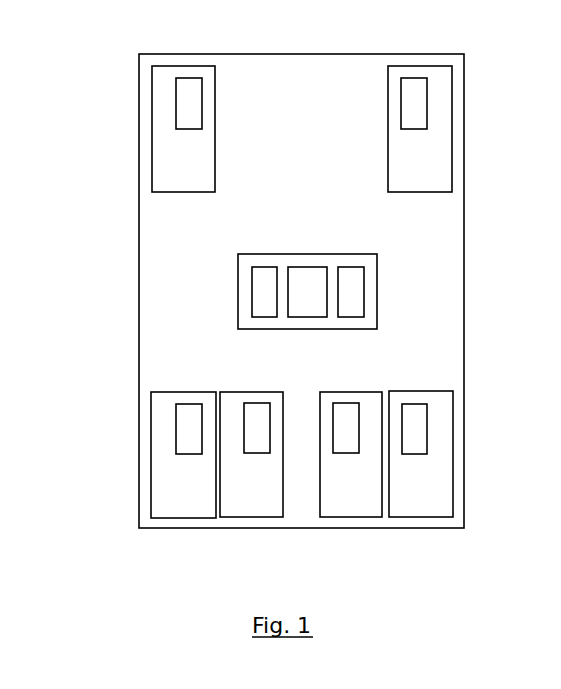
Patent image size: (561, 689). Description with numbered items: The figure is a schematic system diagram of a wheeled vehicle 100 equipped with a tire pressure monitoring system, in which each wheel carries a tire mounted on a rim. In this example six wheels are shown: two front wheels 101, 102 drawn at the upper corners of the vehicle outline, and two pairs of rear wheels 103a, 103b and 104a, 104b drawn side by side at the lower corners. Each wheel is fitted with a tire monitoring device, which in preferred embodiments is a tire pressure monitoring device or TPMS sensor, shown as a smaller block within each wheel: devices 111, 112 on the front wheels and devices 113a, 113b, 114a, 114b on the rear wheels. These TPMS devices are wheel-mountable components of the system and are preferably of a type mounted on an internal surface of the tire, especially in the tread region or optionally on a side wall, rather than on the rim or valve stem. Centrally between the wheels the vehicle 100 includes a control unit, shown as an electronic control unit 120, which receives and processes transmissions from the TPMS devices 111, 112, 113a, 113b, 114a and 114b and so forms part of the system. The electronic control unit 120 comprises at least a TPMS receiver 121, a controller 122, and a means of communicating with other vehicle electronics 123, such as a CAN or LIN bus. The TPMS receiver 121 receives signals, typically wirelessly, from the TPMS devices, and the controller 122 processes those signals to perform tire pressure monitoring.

The wheeled vehicle 100 is at (466, 264).
The wheel 101 is at (163, 104).
The wheel 102 is at (439, 103).
The tire monitoring device 111 is at (188, 118).
The tire monitoring device 112 is at (413, 117).
The electronic control unit 120 is at (238, 304).
The TPMS receiver 121 is at (263, 278).
The controller 122 is at (314, 278).
The means of communicating with other vehicle electronics 123 is at (353, 278).
The wheel 103a is at (165, 435).
The wheel 103b is at (257, 502).
The wheel 104a is at (438, 447).
The wheel 104b is at (347, 505).
The tire monitoring device 113a is at (189, 417).
The tire monitoring device 113b is at (257, 435).
The tire monitoring device 114a is at (420, 420).
The tire monitoring device 114b is at (343, 437).